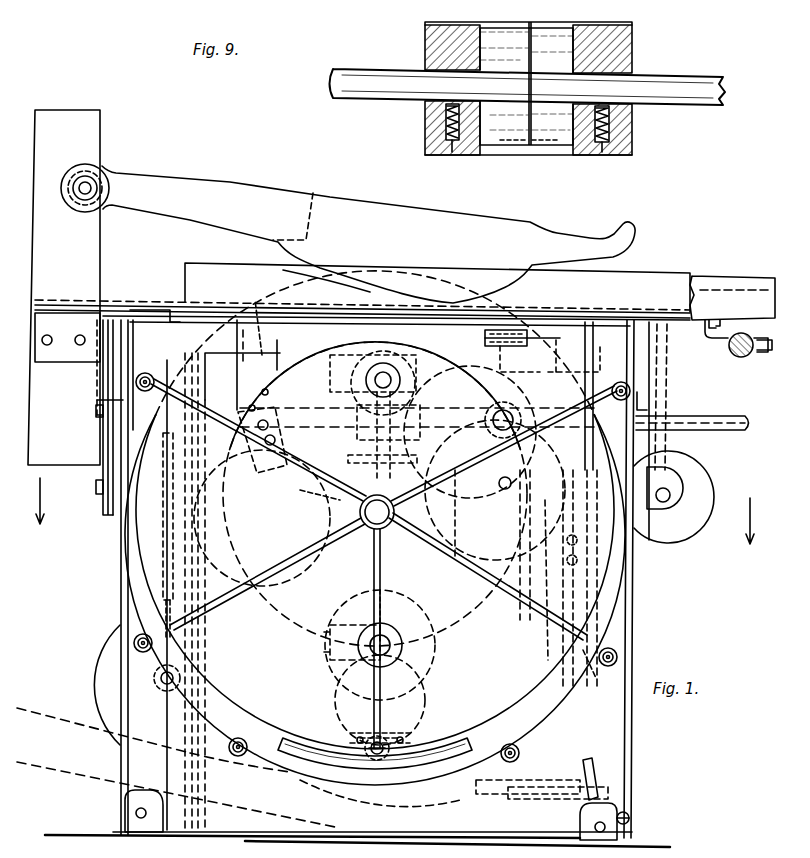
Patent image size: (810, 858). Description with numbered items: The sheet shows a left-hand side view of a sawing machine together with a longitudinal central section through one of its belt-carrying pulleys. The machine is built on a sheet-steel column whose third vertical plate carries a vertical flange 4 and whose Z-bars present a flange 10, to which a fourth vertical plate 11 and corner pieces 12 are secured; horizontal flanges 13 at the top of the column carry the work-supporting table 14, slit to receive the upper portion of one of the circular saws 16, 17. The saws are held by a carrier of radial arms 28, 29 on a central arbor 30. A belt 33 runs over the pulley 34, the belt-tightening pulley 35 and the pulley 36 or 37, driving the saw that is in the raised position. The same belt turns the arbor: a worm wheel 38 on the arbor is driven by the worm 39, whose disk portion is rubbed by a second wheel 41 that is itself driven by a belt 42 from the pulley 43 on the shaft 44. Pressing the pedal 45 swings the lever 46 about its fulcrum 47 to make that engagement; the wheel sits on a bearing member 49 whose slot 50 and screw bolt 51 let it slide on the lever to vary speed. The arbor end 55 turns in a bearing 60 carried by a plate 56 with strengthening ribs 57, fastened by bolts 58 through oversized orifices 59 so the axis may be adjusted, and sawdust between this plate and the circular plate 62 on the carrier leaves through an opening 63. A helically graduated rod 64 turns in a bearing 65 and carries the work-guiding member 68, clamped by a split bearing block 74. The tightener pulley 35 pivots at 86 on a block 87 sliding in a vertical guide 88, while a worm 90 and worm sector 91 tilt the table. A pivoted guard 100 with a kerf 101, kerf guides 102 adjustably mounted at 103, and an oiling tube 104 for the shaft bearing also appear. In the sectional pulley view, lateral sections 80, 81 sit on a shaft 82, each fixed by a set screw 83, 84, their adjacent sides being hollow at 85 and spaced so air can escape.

In FIG. 1, the vertical flange 4 is at (392, 511).
In FIG. 1, the flange of Z-bar 10 is at (620, 338).
In FIG. 1, the fourth vertical plate 11 is at (560, 360).
In FIG. 1, the corner piece 12 is at (140, 793).
In FIG. 1, the horizontal flange 13 is at (612, 322).
In FIG. 1, the work-supporting table 14 is at (150, 304).
In FIG. 1, the circular saw 16 is at (326, 285).
In FIG. 1, the circular saw 17 is at (288, 612).
In FIG. 1, the radial arm 28 is at (372, 465).
In FIG. 1, the radial arm 29 is at (358, 628).
In FIG. 1, the arbor 30 is at (377, 531).
In FIG. 1, the belt 33 is at (82, 732).
In FIG. 1, the pulley 34 is at (430, 806).
In FIG. 1, the belt-tightening pulley 35 is at (100, 670).
In FIG. 1, the pulley 36 is at (418, 348).
In FIG. 1, the pulley 37 is at (410, 650).
In FIG. 1, the worm wheel 38 is at (295, 494).
In FIG. 1, the worm 39 is at (470, 432).
In FIG. 1, the second wheel 41 is at (420, 458).
In FIG. 1, the belt 42 is at (432, 607).
In FIG. 1, the pulley 43 is at (418, 758).
In FIG. 1, the shaft 44 is at (374, 762).
In FIG. 1, the pedal 45 is at (596, 758).
In FIG. 1, the lever 46 is at (492, 798).
In FIG. 1, the fulcrum 47 is at (510, 471).
In FIG. 1, the bearing member 49 is at (575, 335).
In FIG. 1, the slot 50 is at (522, 331).
In FIG. 1, the screw bolt 51 is at (525, 328).
In FIG. 1, the arbor end 55 is at (359, 514).
In FIG. 1, the plate 56 is at (262, 518).
In FIG. 1, the strengthening ribs 57 is at (384, 563).
In FIG. 1, the bolts 58 is at (548, 745).
In FIG. 1, the orifices 59 is at (592, 674).
In FIG. 1, the bearing 60 is at (443, 515).
In FIG. 1, the circular plate 62 is at (356, 350).
In FIG. 1, the opening 63 is at (293, 754).
In FIG. 1, the rod 64 is at (742, 358).
In FIG. 1, the bearing 65 is at (766, 359).
In FIG. 1, the work-guiding member 68 is at (480, 291).
In FIG. 1, the bearing block 74 is at (748, 328).
In FIG. 9, the pulley section 80 is at (470, 147).
In FIG. 9, the pulley section 81 is at (583, 156).
In FIG. 9, the shaft 82 is at (392, 102).
In FIG. 9, the set screw 83 is at (452, 148).
In FIG. 9, the set screw 84 is at (606, 152).
In FIG. 9, the hollow 85 is at (540, 144).
In FIG. 1, the pivot 86 is at (166, 694).
In FIG. 1, the block 87 is at (170, 516).
In FIG. 1, the vertical guide 88 is at (156, 597).
In FIG. 1, the worm 90 is at (673, 491).
In FIG. 1, the worm sector 91 is at (672, 404).
In FIG. 1, the guard 100 is at (348, 233).
In FIG. 1, the kerf 101 is at (345, 258).
In FIG. 1, the guides 102 is at (262, 352).
In FIG. 1, the adjustable mounting 103 is at (284, 433).
In FIG. 1, the oiling tube 104 is at (586, 584).